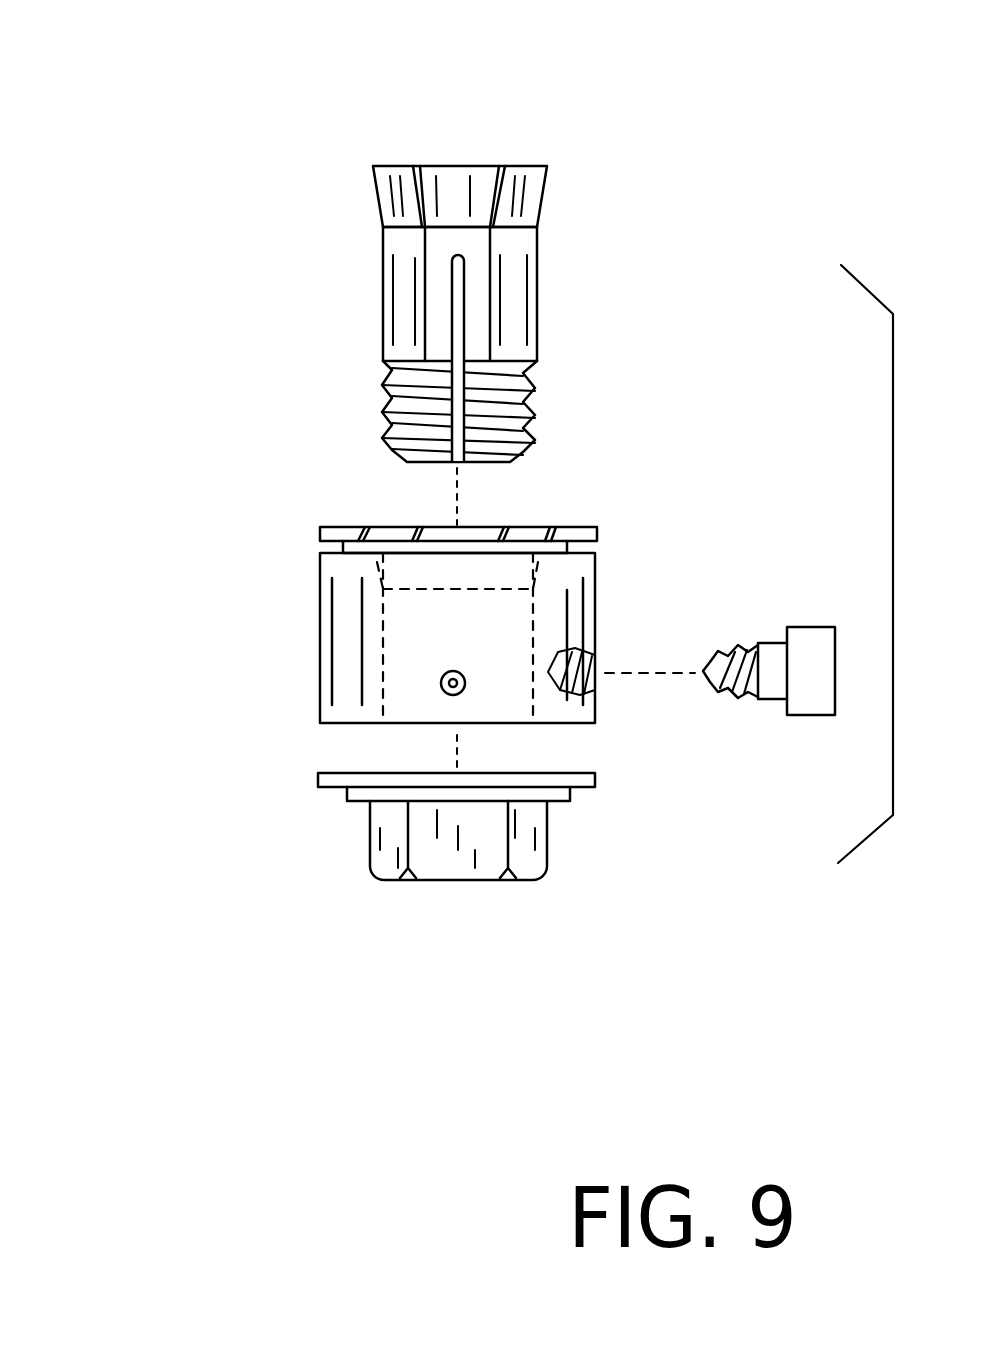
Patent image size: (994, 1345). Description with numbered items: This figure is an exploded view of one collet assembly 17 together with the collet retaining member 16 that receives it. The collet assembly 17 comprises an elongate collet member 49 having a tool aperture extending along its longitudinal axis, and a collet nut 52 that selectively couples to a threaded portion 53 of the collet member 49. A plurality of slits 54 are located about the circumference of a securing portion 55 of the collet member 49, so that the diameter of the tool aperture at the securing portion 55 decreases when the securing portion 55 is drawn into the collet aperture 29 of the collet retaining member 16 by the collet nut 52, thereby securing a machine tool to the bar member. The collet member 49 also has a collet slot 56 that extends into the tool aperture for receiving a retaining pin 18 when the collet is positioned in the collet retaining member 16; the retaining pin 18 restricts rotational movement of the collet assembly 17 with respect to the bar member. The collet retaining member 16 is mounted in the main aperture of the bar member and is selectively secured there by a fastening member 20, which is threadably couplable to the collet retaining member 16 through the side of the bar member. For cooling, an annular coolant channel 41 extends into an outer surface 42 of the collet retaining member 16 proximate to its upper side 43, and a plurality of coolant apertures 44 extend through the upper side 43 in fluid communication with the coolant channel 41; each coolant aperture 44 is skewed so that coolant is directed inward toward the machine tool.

The collet assembly 17 is at (252, 420).
The collet member 49 is at (383, 290).
The slits 54 is at (413, 166).
The securing portion 55 is at (455, 175).
The collet slot 56 is at (457, 345).
The threaded portion 53 is at (520, 425).
The collet retaining member 16 is at (320, 635).
The coolant channel 41 is at (337, 546).
The coolant apertures 44 is at (362, 537).
The upper side 43 is at (592, 551).
The collet aperture 29 is at (383, 665).
The retaining pin 18 is at (441, 685).
The outer surface 42 is at (557, 608).
The collet nut 52 is at (452, 840).
The fastening member 20 is at (790, 716).